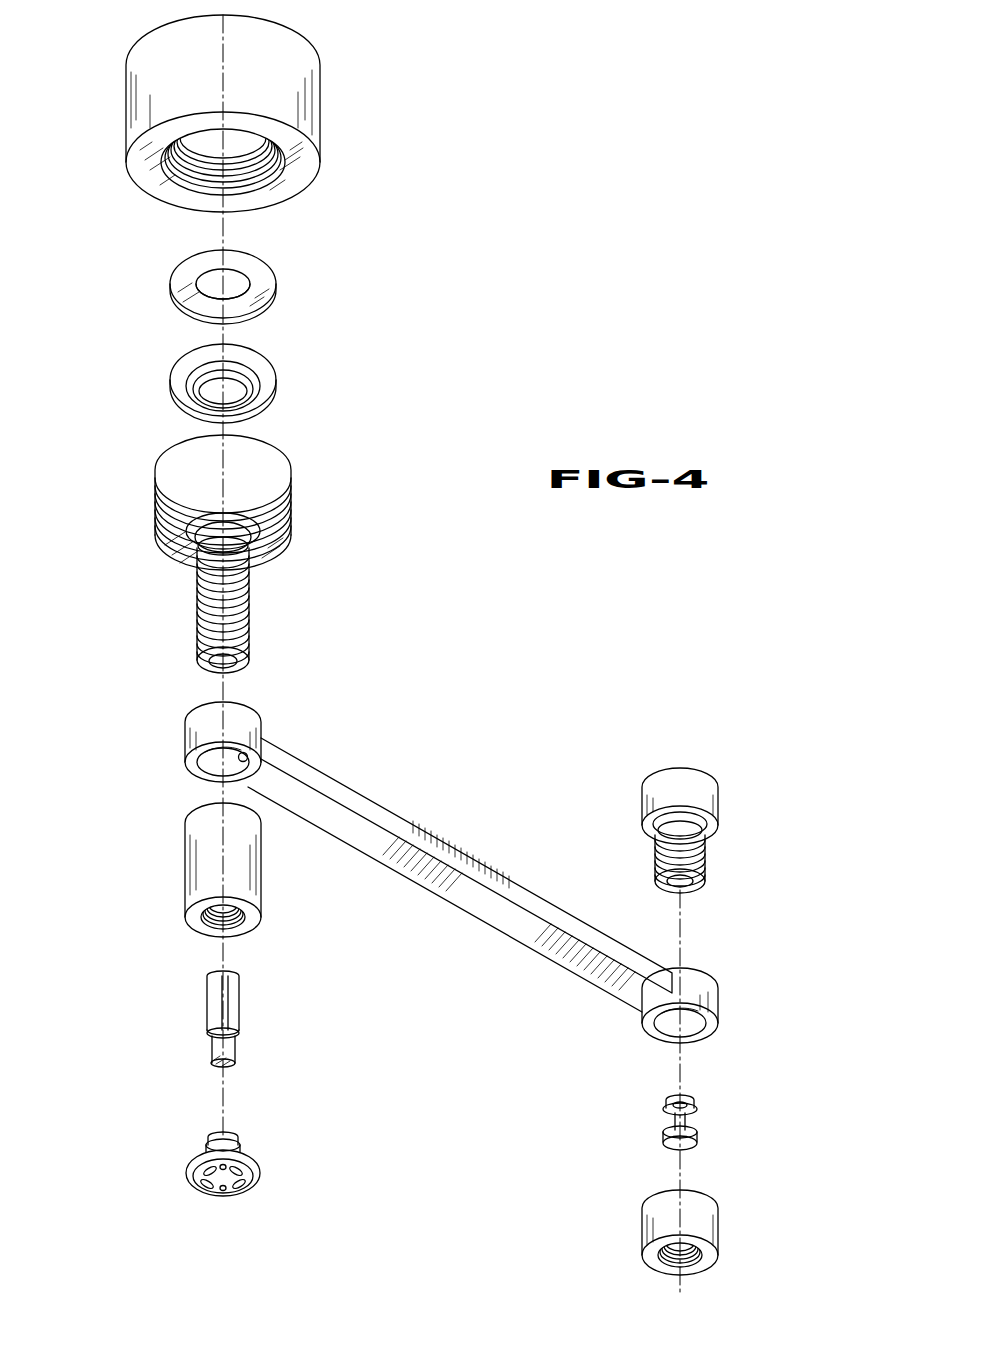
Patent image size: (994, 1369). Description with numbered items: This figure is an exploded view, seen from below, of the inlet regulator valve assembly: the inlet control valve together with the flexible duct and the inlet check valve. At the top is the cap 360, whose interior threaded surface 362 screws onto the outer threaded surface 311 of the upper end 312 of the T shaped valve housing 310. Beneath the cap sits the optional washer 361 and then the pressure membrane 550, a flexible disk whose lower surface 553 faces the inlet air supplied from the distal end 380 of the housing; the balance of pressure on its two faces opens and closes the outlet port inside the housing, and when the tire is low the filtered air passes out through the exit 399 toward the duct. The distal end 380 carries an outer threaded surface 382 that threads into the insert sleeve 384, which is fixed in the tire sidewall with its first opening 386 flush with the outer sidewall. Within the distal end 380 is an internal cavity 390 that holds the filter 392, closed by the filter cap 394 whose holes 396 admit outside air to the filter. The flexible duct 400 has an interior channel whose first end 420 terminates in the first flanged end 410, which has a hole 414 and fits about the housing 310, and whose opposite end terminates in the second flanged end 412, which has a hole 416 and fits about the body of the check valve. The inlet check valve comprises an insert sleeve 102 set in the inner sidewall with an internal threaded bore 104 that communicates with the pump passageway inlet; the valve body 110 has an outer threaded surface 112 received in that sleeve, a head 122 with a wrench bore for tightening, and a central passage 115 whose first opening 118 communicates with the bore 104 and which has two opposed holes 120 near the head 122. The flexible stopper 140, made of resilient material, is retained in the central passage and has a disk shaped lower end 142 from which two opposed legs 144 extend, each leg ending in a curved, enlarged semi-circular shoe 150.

The cap 360 is at (319, 117).
The interior threaded surface 362 is at (185, 172).
The washer 361 is at (255, 275).
The pressure membrane 550 is at (278, 356).
The lower surface 553 is at (255, 385).
The T shaped valve housing 310 is at (206, 511).
The outer threaded surface 311 is at (177, 478).
The upper end 312 is at (292, 464).
The exit 399 is at (236, 541).
The outer threaded surface 382 is at (232, 611).
The distal end 380 is at (249, 655).
The internal cavity 390 is at (216, 662).
The first flanged end 410 is at (210, 716).
The hole 414 is at (217, 758).
The first end 420 is at (246, 758).
The flexible duct 400 is at (406, 809).
The insert sleeve 384 is at (205, 868).
The first opening 386 is at (236, 920).
The filter 392 is at (208, 1010).
The filter cap 394 is at (197, 1175).
The holes 396 is at (243, 1182).
The valve body 110 is at (683, 818).
The head 122 is at (658, 787).
The opposed holes 120 is at (662, 828).
The outer threaded surface 112 is at (706, 864).
The central passage 115 is at (693, 888).
The first opening 118 is at (672, 880).
The second flanged end 412 is at (720, 1000).
The hole 416 is at (670, 1025).
The flexible stopper 140 is at (691, 1120).
The legs 144 is at (689, 1097).
The shoe 150 is at (668, 1112).
The disk shaped lower end 142 is at (686, 1146).
The insert sleeve 102 is at (642, 1226).
The internal threaded bore 104 is at (688, 1256).